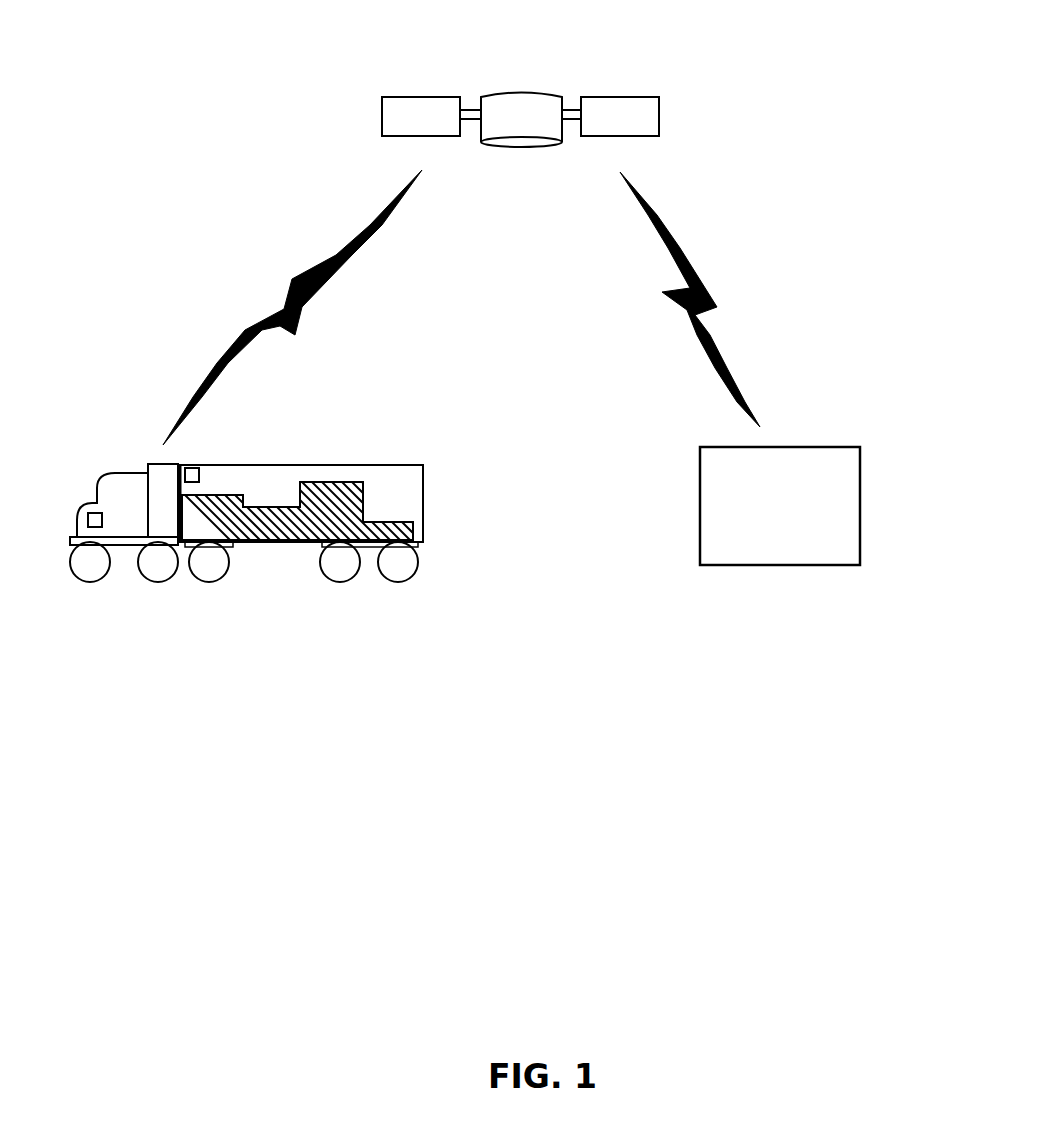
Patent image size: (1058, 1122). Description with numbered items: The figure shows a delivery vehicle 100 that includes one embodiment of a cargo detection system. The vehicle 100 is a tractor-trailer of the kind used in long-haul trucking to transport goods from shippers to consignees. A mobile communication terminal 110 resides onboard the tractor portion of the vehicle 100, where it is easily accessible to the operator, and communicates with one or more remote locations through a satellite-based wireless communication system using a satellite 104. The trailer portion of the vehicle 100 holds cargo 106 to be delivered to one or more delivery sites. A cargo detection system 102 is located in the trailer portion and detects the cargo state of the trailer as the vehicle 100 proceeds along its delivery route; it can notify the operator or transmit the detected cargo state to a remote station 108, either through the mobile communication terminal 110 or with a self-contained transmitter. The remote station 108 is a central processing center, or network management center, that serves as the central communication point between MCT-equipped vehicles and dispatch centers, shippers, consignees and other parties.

The delivery vehicle 100 is at (343, 465).
The cargo detection system 102 is at (193, 467).
The satellite 104 is at (532, 92).
The cargo 106 is at (270, 535).
The remote station 108 is at (828, 447).
The mobile communication terminal 110 is at (92, 513).